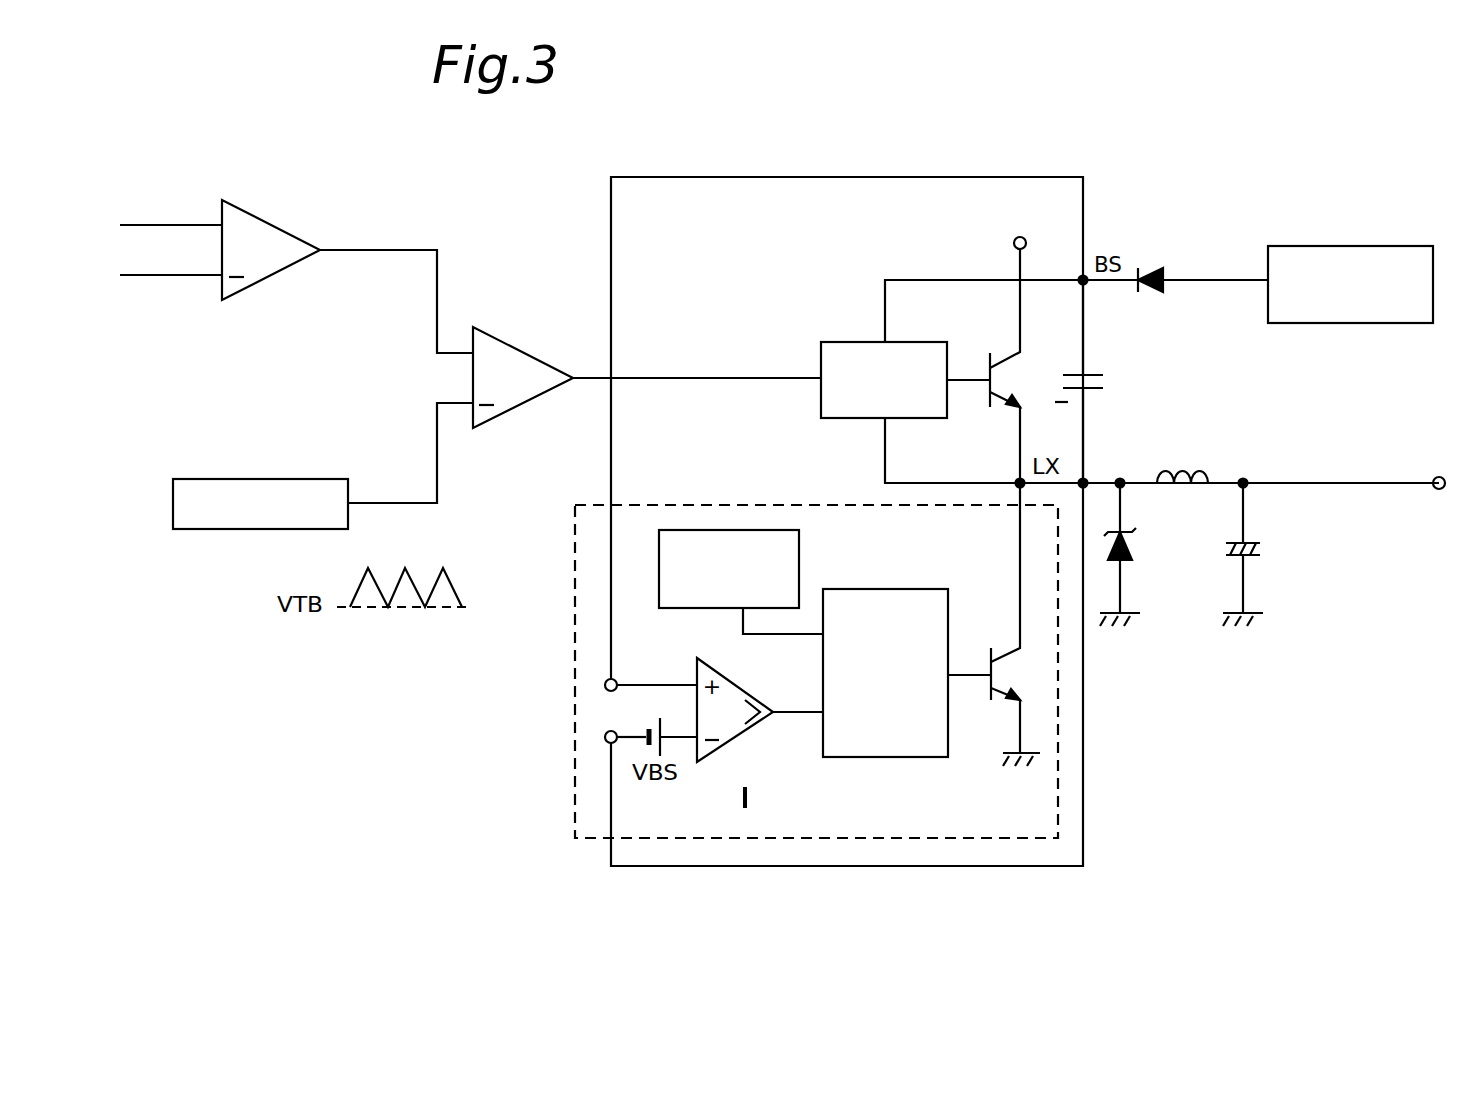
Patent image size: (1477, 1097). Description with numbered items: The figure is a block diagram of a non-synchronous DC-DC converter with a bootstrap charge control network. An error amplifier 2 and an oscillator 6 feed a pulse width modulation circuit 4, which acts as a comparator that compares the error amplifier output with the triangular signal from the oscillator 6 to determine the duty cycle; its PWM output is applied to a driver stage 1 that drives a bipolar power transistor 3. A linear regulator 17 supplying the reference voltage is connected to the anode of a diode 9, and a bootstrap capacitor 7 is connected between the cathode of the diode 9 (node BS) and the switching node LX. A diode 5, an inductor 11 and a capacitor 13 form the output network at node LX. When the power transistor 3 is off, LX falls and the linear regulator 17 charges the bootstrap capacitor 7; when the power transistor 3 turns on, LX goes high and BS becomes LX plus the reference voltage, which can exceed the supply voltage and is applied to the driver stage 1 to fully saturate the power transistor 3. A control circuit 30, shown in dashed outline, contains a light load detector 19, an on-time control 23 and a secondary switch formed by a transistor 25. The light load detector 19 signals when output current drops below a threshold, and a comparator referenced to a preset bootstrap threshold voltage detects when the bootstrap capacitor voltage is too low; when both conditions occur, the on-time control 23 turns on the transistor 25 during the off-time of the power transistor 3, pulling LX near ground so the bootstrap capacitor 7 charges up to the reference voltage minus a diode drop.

The driver stage 1 is at (845, 340).
The error amplifier 2 is at (252, 210).
The power transistor 3 is at (1003, 352).
The pulse width modulation (PWM) circuit 4 is at (527, 410).
The diode 5 is at (1136, 551).
The oscillator 6 is at (262, 478).
The bootstrap capacitor 7 is at (1097, 372).
The diode 9 is at (1146, 266).
The inductor 11 is at (1187, 468).
The capacitor 13 is at (1263, 549).
The linear regulator 17 is at (1352, 246).
The light load detector 19 is at (799, 567).
The on-time control 23 is at (885, 758).
The secondary switch 25 is at (1001, 648).
The control circuit 30 is at (725, 503).